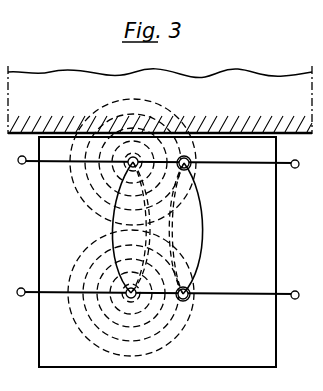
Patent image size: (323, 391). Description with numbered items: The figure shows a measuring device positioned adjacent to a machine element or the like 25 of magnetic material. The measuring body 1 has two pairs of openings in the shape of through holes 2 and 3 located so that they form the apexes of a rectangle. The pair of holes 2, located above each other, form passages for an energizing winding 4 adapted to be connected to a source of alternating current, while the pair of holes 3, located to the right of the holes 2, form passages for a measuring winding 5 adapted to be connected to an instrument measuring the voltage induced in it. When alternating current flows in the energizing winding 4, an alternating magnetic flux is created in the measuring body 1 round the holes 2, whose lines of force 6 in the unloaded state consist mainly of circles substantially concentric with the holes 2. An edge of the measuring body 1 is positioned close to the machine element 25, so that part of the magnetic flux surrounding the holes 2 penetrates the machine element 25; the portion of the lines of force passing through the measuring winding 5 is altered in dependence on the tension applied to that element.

The measuring body 1 is at (41, 346).
The through holes 2 is at (130, 158).
The through holes 3 is at (191, 160).
The energizing winding 4 is at (111, 227).
The measuring winding 5 is at (209, 226).
The lines of force 6 is at (77, 190).
The machine element 25 is at (250, 108).